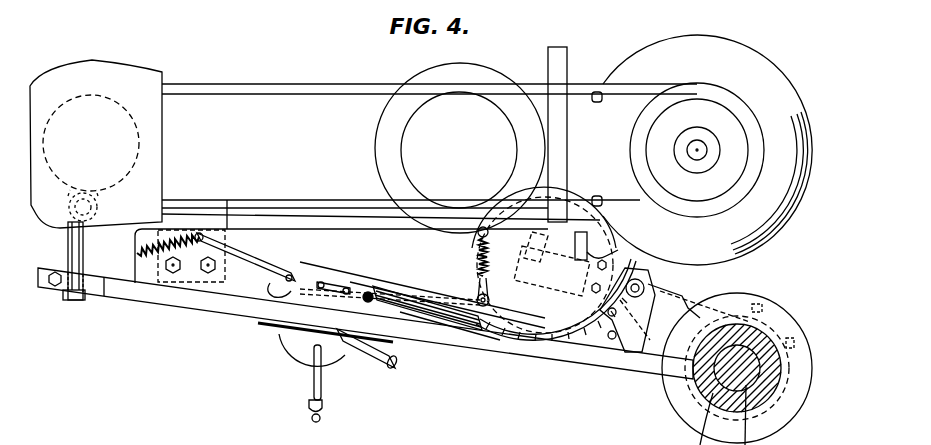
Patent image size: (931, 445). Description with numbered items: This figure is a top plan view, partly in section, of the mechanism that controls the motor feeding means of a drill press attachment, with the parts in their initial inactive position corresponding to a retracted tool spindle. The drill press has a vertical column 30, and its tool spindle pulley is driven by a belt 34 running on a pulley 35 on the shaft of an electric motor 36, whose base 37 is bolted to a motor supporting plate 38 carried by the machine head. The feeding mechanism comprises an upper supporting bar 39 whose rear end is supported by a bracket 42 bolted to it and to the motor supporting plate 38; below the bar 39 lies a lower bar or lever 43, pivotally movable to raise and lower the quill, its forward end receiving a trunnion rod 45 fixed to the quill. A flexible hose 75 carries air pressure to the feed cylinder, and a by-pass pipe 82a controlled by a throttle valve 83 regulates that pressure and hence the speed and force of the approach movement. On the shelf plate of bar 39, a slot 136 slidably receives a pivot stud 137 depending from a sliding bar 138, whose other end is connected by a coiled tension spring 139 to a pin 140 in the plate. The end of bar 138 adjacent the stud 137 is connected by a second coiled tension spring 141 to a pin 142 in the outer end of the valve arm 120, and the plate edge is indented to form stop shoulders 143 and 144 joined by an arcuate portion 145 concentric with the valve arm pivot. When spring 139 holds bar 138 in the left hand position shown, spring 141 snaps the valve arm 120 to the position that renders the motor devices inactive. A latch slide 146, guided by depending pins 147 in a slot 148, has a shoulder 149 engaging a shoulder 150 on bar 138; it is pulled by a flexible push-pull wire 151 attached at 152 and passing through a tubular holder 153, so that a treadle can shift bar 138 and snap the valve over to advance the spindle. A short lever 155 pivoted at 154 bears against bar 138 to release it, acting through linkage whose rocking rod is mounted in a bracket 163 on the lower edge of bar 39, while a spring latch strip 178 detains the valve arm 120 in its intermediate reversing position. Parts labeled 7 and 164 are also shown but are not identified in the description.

The frame member 7 is at (104, 290).
The vertical column 30 is at (400, 134).
The belt 34 is at (360, 84).
The pulley 35 is at (697, 82).
The electric motor 36 is at (640, 50).
The base 37 is at (584, 83).
The motor supporting plate 38 is at (563, 46).
The upper supporting bar 39 is at (205, 300).
The bracket 42 is at (552, 264).
The lower bar or lever 43 is at (115, 292).
The trunnion rod 45 is at (70, 301).
The flexible hose 75 is at (366, 352).
The by-pass pipe 82a is at (314, 378).
The throttle valve 83 is at (313, 420).
The valve arm 120 is at (513, 225).
The slot 136 is at (537, 320).
The pivot stud 137 is at (478, 290).
The bar 138 is at (417, 278).
The coiled tension spring 139 is at (172, 235).
The pin 140 is at (137, 253).
The coiled tension spring 141 is at (478, 256).
The pin 142 is at (478, 234).
The stop shoulder 143 is at (484, 230).
The stop shoulder 144 is at (616, 256).
The arcuate portion 145 is at (574, 222).
The latch slide 146 is at (290, 336).
The guide pins 147 is at (318, 290).
The slot 148 is at (455, 330).
The shoulder 149 is at (330, 282).
The shoulder 150 is at (336, 284).
The flexible push-pull wire 151 is at (430, 316).
The wire connection 152 is at (368, 292).
The tubular holder 153 is at (585, 333).
The pivot 154 is at (287, 276).
The short lever 155 is at (272, 283).
The bracket 163 is at (674, 298).
The brake arm 164 is at (633, 337).
The spring latch strip 178 is at (638, 260).